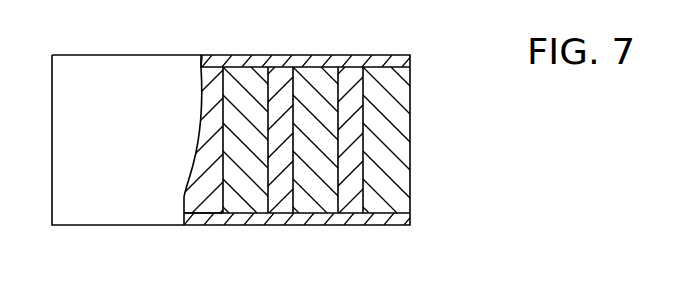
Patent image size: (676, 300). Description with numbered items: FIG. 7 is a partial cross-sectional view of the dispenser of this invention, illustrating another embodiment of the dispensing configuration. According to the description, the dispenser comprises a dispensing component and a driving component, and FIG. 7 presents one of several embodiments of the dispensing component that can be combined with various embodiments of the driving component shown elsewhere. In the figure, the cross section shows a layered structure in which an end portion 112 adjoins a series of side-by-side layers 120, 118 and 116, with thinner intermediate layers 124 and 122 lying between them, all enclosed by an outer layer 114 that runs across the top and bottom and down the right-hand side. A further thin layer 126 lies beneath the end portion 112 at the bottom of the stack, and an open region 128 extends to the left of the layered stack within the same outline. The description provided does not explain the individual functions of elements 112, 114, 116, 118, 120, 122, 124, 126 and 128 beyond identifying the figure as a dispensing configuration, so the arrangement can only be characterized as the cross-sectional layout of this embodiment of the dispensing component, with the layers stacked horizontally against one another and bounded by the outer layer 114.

The tapered end layer 112 is at (225, 54).
The outer layer 114 is at (397, 213).
The layer 116 is at (383, 66).
The layer 118 is at (320, 65).
The layer 120 is at (255, 65).
The intermediate layer 122 is at (348, 226).
The intermediate layer 124 is at (285, 226).
The intermediate layer 126 is at (218, 226).
The cavity 128 is at (112, 55).